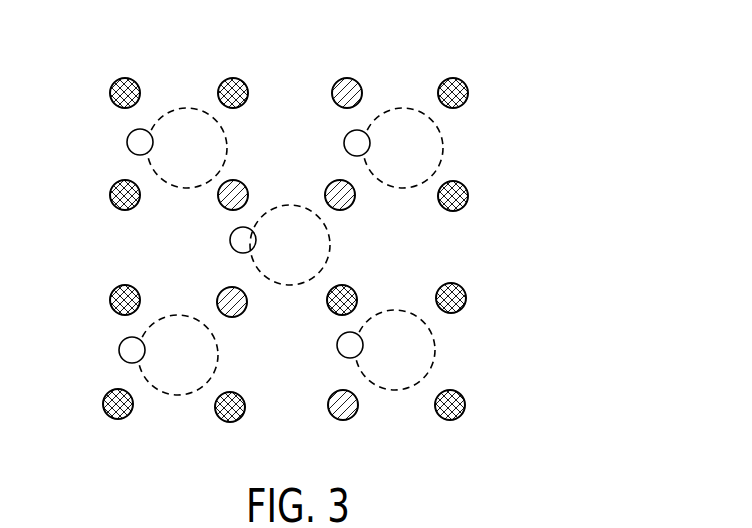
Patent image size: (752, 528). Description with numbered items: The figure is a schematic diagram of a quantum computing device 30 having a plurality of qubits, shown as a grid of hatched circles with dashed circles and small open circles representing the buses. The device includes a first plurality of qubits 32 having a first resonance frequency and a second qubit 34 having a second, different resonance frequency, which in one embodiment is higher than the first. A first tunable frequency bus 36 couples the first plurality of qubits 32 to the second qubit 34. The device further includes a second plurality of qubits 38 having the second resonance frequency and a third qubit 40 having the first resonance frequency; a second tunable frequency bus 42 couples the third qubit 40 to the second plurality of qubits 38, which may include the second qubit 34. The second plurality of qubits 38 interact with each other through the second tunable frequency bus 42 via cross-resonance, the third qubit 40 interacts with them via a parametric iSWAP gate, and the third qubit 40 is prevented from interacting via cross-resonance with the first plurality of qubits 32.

The quantum computing device 30 is at (542, 132).
The first plurality of qubits 32 is at (100, 88).
The second qubit 34 is at (219, 203).
The first tunable frequency bus 36 is at (127, 138).
The second plurality of qubits 38 is at (330, 178).
The third qubit 40 is at (327, 307).
The second tunable frequency bus 42 is at (333, 250).